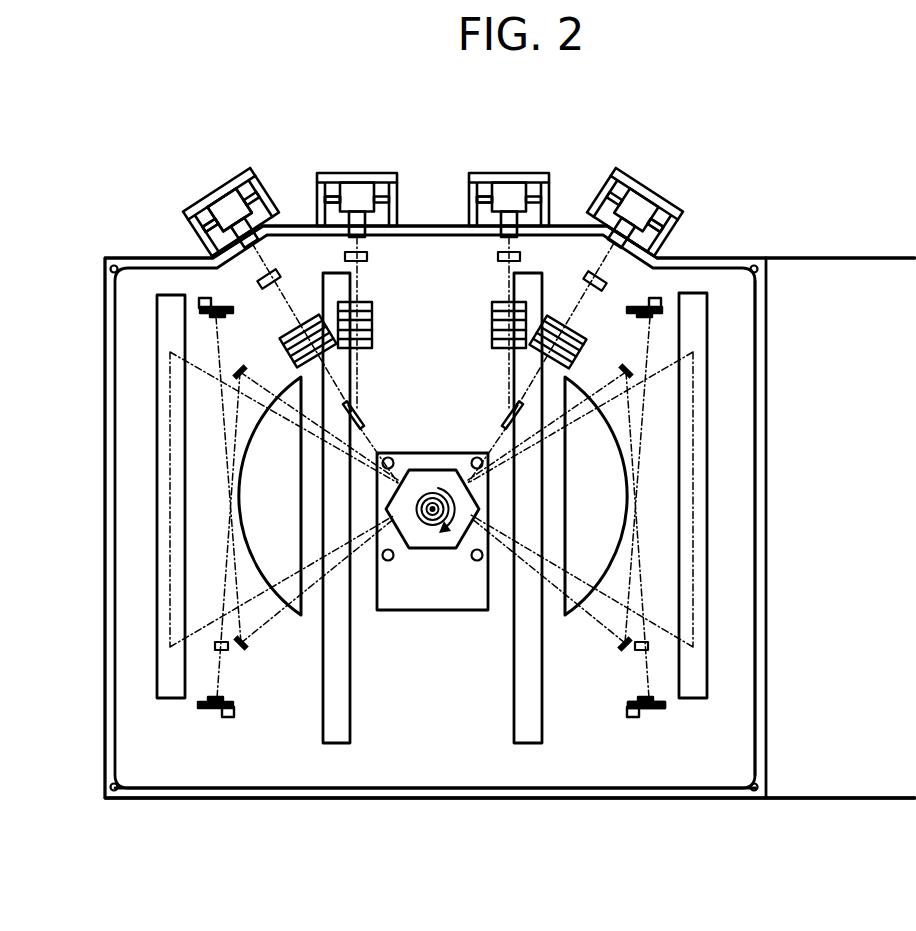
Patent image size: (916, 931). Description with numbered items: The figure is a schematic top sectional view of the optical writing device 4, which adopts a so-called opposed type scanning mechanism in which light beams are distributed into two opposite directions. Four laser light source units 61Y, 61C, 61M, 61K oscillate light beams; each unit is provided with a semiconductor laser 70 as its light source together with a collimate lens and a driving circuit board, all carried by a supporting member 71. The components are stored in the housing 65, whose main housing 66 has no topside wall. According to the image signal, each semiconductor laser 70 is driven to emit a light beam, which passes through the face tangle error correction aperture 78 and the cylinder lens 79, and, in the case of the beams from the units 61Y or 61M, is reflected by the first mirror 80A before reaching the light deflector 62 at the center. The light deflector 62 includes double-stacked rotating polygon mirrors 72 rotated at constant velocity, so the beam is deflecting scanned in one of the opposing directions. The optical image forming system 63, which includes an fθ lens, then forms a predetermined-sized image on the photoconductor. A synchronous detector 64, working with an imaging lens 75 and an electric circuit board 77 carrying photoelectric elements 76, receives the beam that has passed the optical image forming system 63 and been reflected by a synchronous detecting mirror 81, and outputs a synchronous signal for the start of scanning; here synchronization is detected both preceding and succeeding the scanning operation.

The optical writing device 4 is at (846, 146).
The laser light source unit 61C is at (212, 188).
The laser light source unit 61Y is at (365, 173).
The laser light source unit 61M is at (518, 173).
The laser light source unit 61K is at (652, 192).
The light deflector 62 is at (442, 548).
The optical image forming system 63 is at (301, 616).
The synchronous detector 64 is at (218, 297).
The housing 65 is at (470, 812).
The main housing 66 is at (398, 800).
The semiconductor laser 70 is at (227, 191).
The supporting member 71 is at (195, 204).
The rotating polygon mirror 72 is at (423, 548).
The imaging lens 75 is at (647, 645).
The photoelectric element 76 is at (661, 702).
The electric circuit board 77 is at (634, 718).
The face tangle error correction aperture 78 is at (586, 276).
The cylinder lens 79 is at (740, 340).
The first mirror 80A is at (353, 413).
The synchronous detecting mirror 81 is at (623, 648).